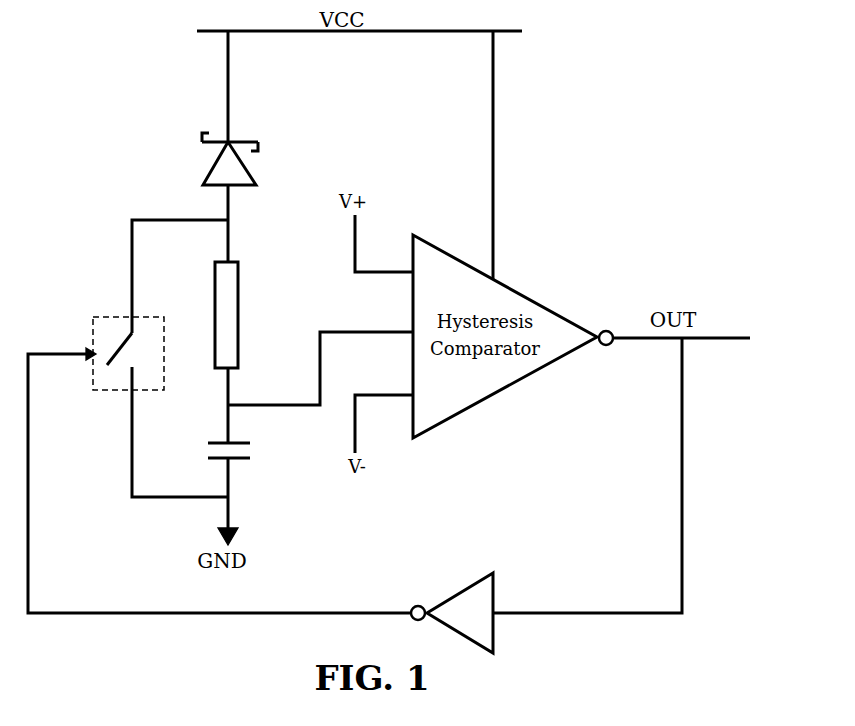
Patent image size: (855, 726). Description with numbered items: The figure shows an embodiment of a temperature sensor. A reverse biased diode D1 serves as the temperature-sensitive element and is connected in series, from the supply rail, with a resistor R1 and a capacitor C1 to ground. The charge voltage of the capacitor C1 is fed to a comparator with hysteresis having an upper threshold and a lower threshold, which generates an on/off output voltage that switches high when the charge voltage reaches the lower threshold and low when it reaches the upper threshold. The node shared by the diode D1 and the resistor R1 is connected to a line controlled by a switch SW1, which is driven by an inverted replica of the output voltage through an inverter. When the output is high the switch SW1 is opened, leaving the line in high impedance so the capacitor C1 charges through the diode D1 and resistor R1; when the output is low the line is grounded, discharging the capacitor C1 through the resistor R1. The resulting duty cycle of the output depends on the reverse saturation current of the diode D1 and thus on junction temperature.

The reverse biased diode D1 is at (243, 159).
The resistor R1 is at (209, 315).
The capacitor C1 is at (245, 454).
The switch SW1 is at (120, 343).